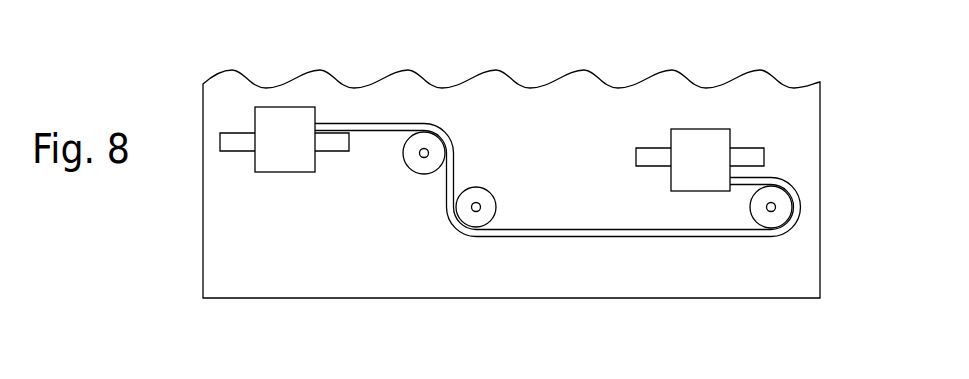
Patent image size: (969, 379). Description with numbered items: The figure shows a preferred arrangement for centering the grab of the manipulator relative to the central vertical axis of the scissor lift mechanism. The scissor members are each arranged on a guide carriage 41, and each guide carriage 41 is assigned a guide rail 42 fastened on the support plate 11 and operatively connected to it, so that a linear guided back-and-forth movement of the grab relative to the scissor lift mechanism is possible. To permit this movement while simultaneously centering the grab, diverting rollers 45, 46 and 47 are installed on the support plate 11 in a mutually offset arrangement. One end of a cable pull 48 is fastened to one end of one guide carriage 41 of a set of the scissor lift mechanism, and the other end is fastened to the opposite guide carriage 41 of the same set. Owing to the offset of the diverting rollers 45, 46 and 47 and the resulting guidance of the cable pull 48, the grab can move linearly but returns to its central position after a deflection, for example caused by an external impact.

The support plate 11 is at (820, 173).
The guide carriage 41 is at (287, 172).
The guide rail 42 is at (243, 141).
The diverting roller 45 is at (420, 167).
The diverting roller 46 is at (473, 190).
The diverting roller 47 is at (775, 222).
The cable pull 48 is at (638, 238).